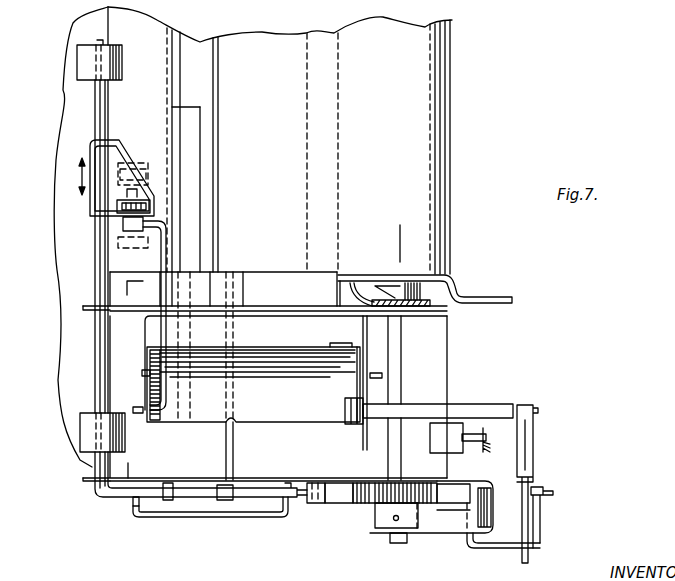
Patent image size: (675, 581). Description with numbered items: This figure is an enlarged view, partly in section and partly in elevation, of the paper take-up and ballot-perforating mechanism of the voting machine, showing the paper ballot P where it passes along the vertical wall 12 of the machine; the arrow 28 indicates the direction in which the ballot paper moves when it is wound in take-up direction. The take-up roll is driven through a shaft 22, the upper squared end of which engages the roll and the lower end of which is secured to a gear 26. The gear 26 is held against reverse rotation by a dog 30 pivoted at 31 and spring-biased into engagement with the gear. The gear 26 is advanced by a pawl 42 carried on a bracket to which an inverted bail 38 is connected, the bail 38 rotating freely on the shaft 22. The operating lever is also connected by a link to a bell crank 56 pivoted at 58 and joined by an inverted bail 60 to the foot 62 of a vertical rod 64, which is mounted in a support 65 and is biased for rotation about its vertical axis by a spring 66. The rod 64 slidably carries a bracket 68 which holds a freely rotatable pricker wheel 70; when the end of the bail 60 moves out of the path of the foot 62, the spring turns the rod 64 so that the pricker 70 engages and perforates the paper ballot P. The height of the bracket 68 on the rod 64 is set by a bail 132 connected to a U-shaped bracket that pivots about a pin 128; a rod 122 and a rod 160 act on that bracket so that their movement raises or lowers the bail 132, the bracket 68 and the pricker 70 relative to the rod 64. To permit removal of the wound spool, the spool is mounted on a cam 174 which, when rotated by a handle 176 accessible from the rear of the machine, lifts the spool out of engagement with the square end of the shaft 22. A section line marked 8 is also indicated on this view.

The paper ballot P is at (441, 138).
The section line 8- 8 is at (43, 107).
The vertical wall 12 is at (395, 258).
The shaft 22 is at (397, 386).
The gear 26 is at (367, 503).
The arrow 28 is at (320, 140).
The dog 30 is at (337, 503).
The pivot 31 is at (318, 507).
The inverted bail 38 is at (482, 549).
The pawl 42 is at (454, 490).
The bell crank 56 is at (260, 488).
The pivot 58 is at (234, 437).
The inverted bail 60 is at (202, 519).
The foot 62 is at (112, 498).
The vertical rod 64 is at (105, 105).
The support 65 is at (88, 62).
The spring 66 is at (165, 505).
The bracket 68 is at (118, 153).
The pricker wheel 70 is at (112, 208).
The rod 122 is at (543, 533).
The pin 128 is at (297, 377).
The bail 132 is at (162, 247).
The rod 160 is at (372, 442).
The cam 174 is at (387, 290).
The handle 176 is at (513, 298).